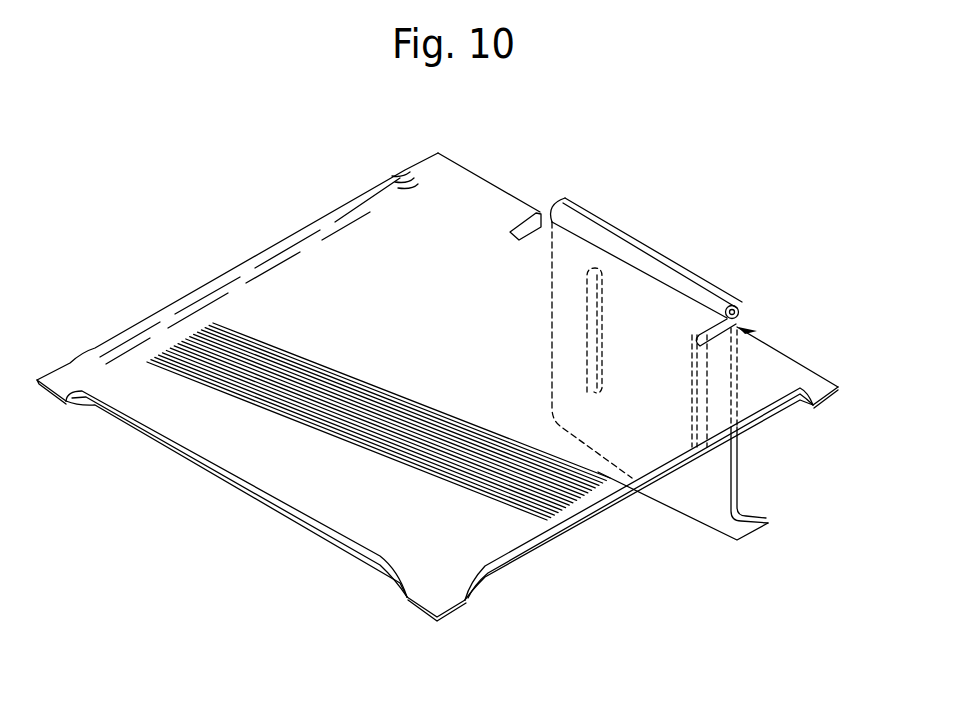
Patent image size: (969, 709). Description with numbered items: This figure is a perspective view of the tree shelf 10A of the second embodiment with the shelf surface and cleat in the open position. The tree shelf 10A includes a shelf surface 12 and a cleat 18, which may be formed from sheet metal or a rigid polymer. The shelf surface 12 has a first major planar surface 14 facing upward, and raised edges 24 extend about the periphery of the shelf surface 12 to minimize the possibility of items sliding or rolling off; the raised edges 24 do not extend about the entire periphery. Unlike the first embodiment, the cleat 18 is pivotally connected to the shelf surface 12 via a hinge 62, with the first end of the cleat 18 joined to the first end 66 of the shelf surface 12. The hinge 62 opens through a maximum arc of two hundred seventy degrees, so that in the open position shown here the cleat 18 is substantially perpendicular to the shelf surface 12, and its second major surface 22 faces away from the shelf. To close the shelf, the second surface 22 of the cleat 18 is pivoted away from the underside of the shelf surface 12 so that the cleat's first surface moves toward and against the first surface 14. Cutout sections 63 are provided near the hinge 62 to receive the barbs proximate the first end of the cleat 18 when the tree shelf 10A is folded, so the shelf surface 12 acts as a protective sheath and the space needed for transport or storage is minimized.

The tree shelf 10A is at (437, 380).
The shelf surface 12 is at (437, 380).
The first major planar surface 14 is at (396, 516).
The cleat 18 is at (760, 481).
The second major surface 22 is at (697, 503).
The raised edges 24 is at (533, 543).
The hinge 62 is at (763, 315).
The cutout sections 63 is at (522, 221).
The first end 66 is at (455, 180).